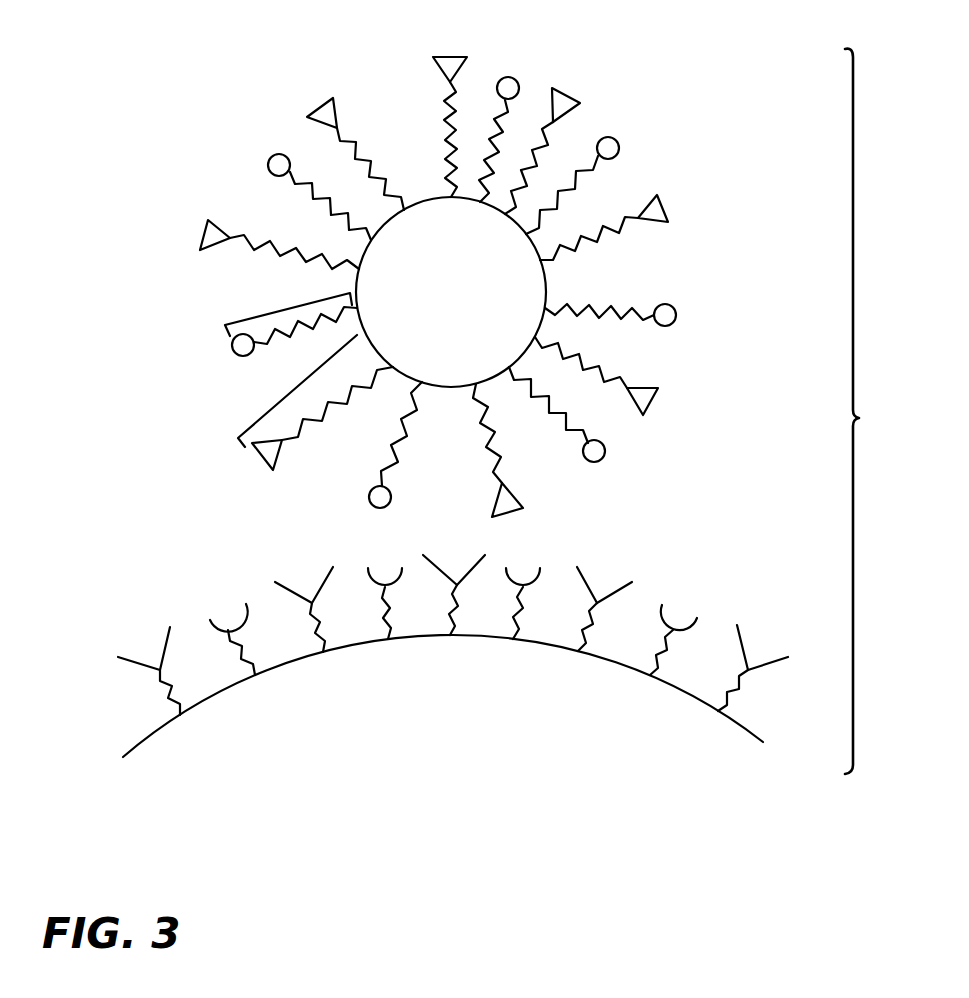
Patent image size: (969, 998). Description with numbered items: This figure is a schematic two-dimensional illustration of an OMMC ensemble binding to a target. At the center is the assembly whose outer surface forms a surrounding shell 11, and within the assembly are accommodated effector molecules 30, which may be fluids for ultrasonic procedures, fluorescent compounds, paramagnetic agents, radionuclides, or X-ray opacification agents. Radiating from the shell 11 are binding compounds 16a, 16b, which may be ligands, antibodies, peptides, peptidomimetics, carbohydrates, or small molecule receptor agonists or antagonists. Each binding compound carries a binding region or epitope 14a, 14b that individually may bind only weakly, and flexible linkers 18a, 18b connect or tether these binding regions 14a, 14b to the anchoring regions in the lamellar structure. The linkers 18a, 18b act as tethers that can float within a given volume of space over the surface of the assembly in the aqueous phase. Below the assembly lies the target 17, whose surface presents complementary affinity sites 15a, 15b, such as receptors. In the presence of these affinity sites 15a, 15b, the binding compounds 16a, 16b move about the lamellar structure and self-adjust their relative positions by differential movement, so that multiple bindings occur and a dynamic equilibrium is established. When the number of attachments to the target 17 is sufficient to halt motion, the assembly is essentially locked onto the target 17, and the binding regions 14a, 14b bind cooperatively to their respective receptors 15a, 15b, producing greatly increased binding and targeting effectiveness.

The effector molecule 30 is at (475, 322).
The surrounding shell 11 is at (548, 278).
The binding region 14a is at (517, 500).
The binding region 14b is at (391, 488).
The complementary affinity site 15a is at (217, 623).
The complementary affinity site 15b is at (310, 602).
The binding compound 16a is at (293, 388).
The binding compound 16b is at (273, 307).
The target 17 is at (752, 725).
The flexible linker 18a is at (490, 432).
The flexible linker 18b is at (400, 437).